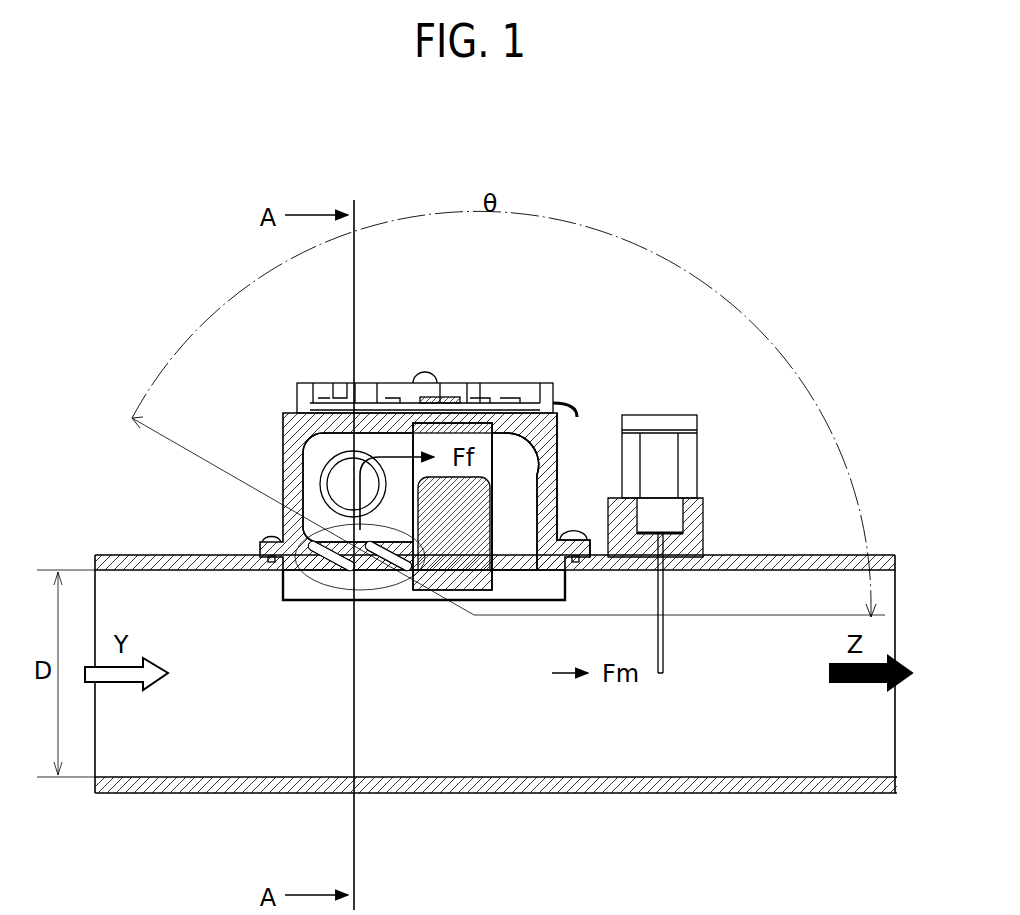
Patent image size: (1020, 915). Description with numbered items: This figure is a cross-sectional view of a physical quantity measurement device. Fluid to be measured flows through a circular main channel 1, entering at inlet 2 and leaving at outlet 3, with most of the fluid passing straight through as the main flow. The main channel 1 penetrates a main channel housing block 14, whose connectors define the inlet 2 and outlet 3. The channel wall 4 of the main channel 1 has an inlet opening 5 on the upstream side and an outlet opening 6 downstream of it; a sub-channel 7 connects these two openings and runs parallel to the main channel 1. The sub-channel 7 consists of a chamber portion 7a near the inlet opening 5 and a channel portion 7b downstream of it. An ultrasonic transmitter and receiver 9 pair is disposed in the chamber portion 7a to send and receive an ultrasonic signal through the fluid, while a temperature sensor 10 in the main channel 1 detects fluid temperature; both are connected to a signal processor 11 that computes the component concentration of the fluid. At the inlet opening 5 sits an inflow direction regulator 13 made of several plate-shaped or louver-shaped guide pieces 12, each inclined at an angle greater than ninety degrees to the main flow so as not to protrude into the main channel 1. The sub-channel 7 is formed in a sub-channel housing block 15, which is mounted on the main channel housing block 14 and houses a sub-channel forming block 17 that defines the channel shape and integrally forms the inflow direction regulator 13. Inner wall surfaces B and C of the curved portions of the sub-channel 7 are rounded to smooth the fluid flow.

The main channel 1 is at (247, 732).
The inlet 2 is at (127, 737).
The outlet 3 is at (880, 740).
The channel wall 4 is at (190, 570).
The inlet opening 5 is at (343, 532).
The outlet opening 6 is at (520, 562).
The sub-channel 7 is at (398, 472).
The chamber portion 7a is at (340, 451).
The channel portion 7b is at (513, 475).
The receiver 9 is at (327, 477).
The temperature sensor 10 is at (665, 515).
The signal processor 11 is at (437, 397).
The guide piece 12 is at (342, 563).
The inflow direction regulator 13 is at (377, 588).
The main channel housing block 14 is at (472, 782).
The sub-channel housing block 15 is at (550, 480).
The sub-channel forming block 17 is at (450, 578).
The inner wall surface B is at (518, 443).
The inner wall surface C is at (322, 447).